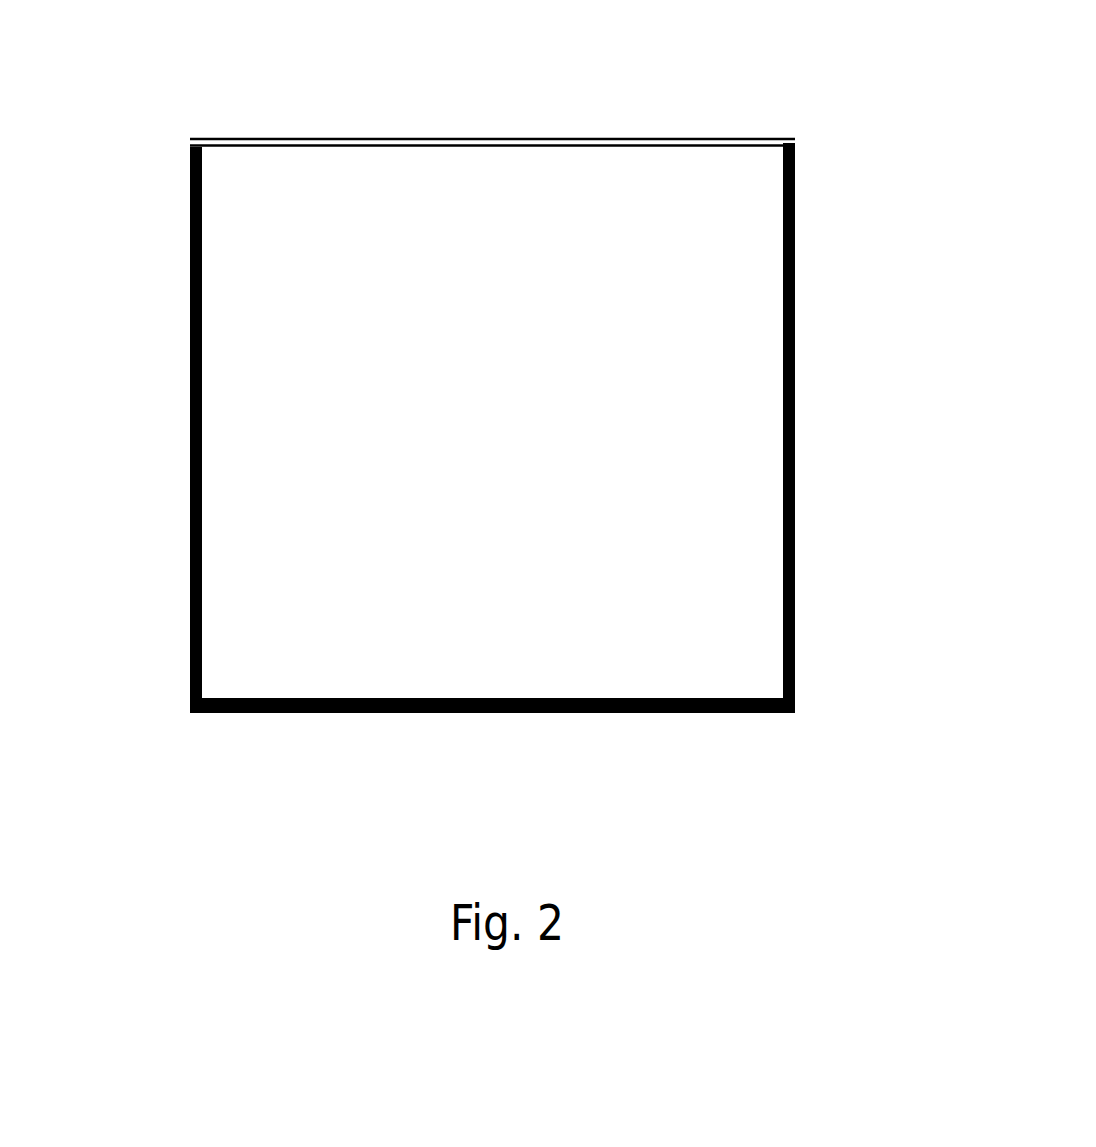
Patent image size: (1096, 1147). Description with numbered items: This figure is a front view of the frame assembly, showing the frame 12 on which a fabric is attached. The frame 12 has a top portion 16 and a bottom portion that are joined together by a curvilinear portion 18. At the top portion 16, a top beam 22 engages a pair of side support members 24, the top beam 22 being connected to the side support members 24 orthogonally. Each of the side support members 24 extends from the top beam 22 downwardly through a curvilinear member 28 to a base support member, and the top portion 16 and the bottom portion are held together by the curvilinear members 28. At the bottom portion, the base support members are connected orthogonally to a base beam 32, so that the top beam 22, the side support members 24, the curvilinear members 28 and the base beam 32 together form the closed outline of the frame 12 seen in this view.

The frame 12 is at (473, 415).
The top portion 16 is at (718, 248).
The curvilinear portion 18 is at (727, 603).
The top beam 22 is at (357, 137).
The side support members 24 is at (190, 362).
The curvilinear members 28 is at (190, 643).
The base beam 32 is at (485, 713).